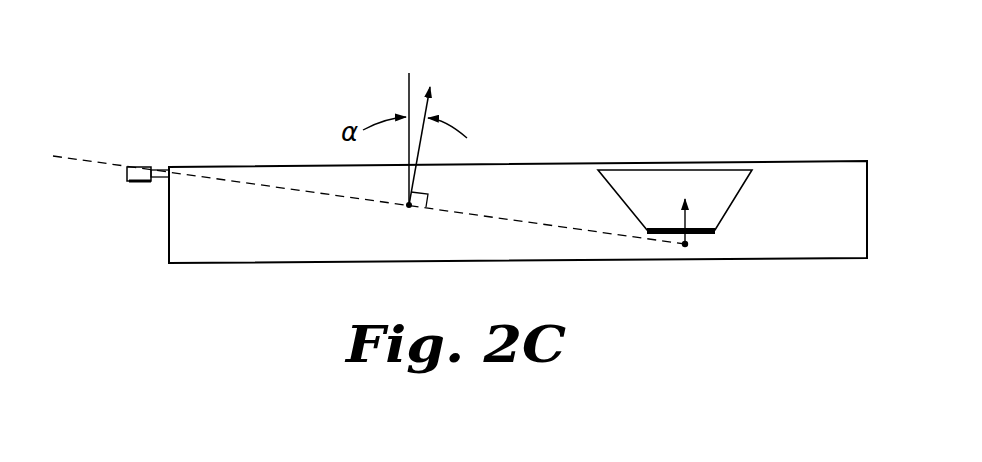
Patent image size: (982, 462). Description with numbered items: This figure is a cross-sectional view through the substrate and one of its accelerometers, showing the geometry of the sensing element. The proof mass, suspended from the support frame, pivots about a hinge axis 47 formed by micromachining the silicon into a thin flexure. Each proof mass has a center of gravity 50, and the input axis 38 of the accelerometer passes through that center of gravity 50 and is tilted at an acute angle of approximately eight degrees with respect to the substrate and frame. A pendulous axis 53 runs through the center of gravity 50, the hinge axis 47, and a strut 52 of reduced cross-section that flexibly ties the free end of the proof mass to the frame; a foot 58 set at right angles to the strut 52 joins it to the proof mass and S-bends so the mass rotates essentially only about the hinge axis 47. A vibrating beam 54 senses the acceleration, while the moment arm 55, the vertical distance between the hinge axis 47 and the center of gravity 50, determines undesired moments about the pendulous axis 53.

The input axis 38 is at (421, 147).
The hinge axis 47 is at (686, 246).
The center of gravity 50 is at (409, 205).
The strut 52 is at (136, 167).
The pendulous axis 53 is at (256, 185).
The vibrating beam 54 is at (697, 162).
The moment arm 55 is at (687, 218).
The foot 58 is at (161, 169).